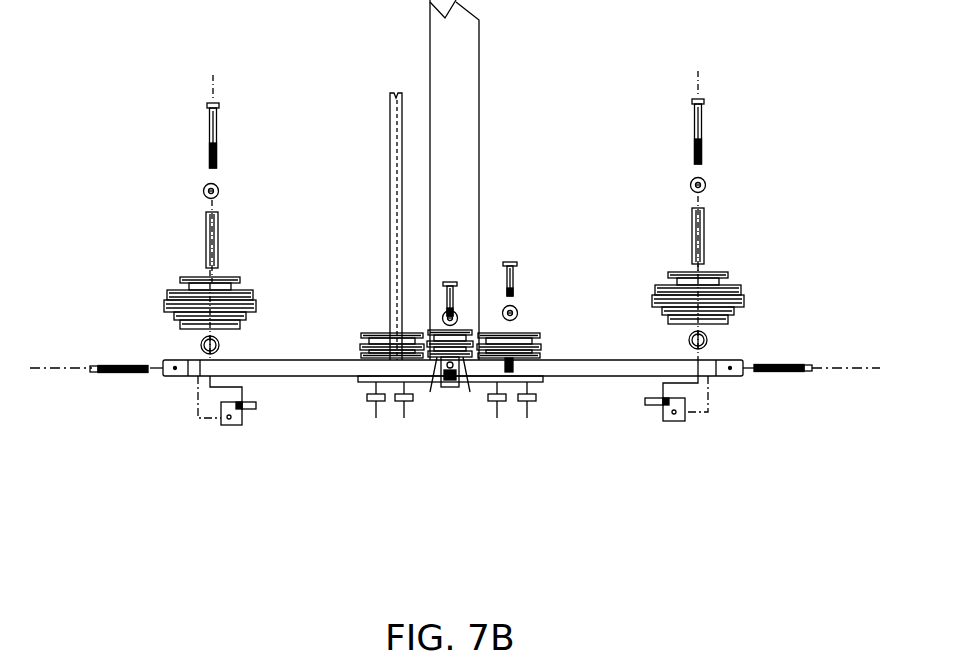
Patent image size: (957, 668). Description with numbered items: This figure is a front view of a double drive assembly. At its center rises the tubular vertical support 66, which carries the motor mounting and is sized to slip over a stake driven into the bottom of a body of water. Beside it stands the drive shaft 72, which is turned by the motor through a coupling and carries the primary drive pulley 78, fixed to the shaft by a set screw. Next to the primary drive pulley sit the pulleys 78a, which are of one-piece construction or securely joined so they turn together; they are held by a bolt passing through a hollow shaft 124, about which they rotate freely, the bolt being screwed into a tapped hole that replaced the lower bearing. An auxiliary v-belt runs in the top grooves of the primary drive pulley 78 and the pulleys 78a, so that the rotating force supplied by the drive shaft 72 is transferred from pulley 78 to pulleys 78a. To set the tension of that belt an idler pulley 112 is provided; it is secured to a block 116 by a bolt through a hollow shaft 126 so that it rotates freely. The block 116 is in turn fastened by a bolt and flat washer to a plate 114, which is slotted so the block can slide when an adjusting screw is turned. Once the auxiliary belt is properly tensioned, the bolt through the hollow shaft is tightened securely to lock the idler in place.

The vertical support 66 is at (451, 129).
The drive shaft 72 is at (392, 148).
The primary drive pulley 78 is at (372, 337).
The pulleys 78a is at (532, 345).
The idler pulley 112 is at (460, 338).
The plate 114 is at (541, 382).
The block 116 is at (440, 356).
The hollow shaft 124 is at (516, 340).
The hollow shaft 126 is at (440, 338).